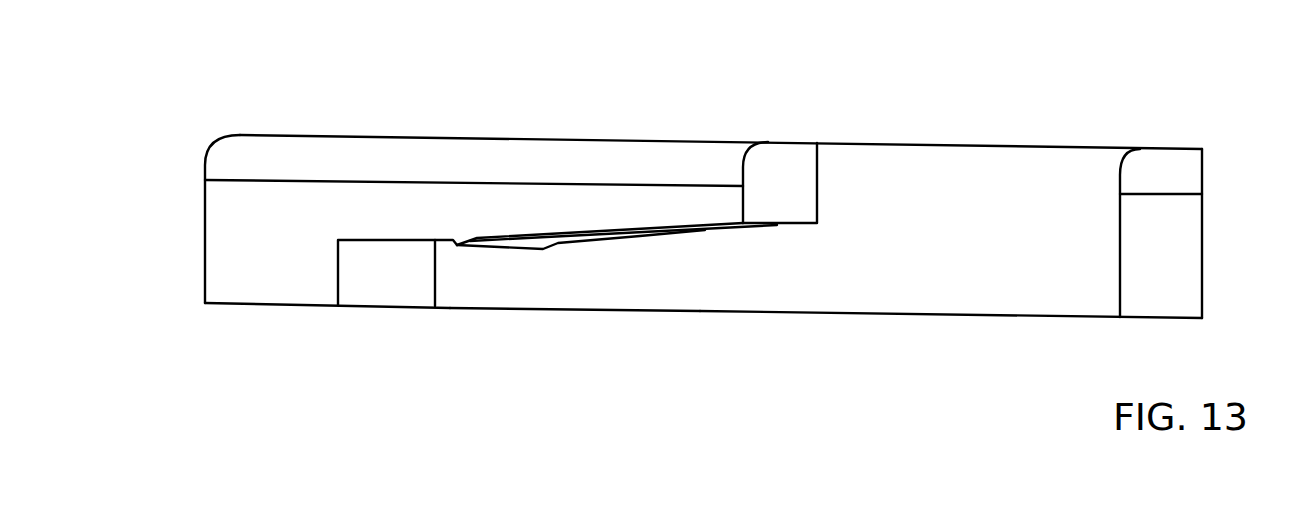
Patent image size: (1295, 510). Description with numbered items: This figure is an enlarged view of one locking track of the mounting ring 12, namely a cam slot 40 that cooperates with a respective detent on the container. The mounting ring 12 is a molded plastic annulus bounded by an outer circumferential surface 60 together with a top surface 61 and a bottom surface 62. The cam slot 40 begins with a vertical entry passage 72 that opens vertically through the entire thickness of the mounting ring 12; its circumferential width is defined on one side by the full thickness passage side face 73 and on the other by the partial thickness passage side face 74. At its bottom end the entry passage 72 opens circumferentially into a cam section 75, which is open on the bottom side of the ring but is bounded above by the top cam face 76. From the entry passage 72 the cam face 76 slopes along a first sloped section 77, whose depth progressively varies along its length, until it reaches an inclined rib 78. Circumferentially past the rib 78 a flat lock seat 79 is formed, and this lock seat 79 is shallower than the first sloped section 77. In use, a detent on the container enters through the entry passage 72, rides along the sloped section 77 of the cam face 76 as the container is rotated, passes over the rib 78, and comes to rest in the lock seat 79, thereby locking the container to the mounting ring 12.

The mounting ring 12 is at (1100, 138).
The cam slot 40 is at (798, 354).
The outer circumferential surface 60 is at (205, 234).
The top surface 61 is at (350, 136).
The bottom surface 62 is at (292, 306).
The vertical entry passage 72 is at (885, 165).
The full thickness passage side face 73 is at (1117, 277).
The partial thickness passage side face 74 is at (793, 160).
The cam section 75 is at (620, 340).
The top cam face 76 is at (582, 228).
The first sloped section 77 is at (670, 228).
The inclined rib 78 is at (501, 246).
The flat lock seat 79 is at (415, 240).